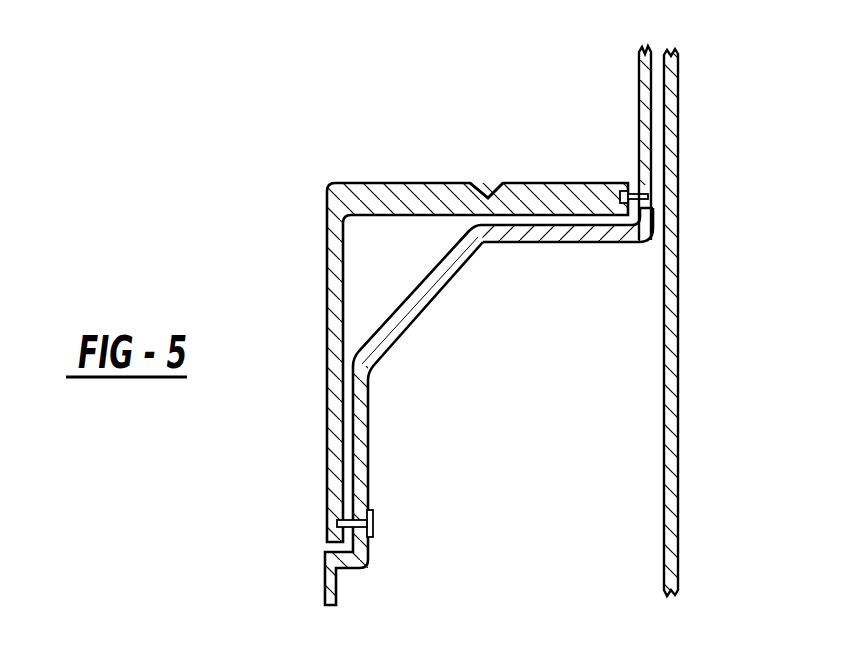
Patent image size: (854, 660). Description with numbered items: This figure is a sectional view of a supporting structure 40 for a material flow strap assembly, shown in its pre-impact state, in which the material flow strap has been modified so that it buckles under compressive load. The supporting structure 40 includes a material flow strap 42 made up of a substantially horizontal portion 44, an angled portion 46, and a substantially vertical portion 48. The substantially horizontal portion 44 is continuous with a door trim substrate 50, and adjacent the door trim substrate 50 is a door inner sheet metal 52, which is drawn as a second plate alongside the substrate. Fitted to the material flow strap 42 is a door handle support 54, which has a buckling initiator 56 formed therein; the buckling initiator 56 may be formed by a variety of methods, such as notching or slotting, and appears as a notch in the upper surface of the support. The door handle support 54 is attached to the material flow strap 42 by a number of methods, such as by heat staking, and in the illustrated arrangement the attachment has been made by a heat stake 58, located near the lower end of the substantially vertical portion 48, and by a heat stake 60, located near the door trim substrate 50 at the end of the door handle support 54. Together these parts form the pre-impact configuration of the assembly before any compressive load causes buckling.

The supporting structure 40 is at (276, 222).
The material flow strap 42 is at (523, 244).
The substantially horizontal portion 44 is at (551, 244).
The angled portion 46 is at (403, 336).
The substantially vertical portion 48 is at (369, 467).
The door trim substrate 50 is at (638, 115).
The door inner sheet metal 52 is at (680, 245).
The door handle support 54 is at (366, 184).
The buckling initiator 56 is at (487, 190).
The heat stake 58 is at (374, 524).
The heat stake 60 is at (655, 202).